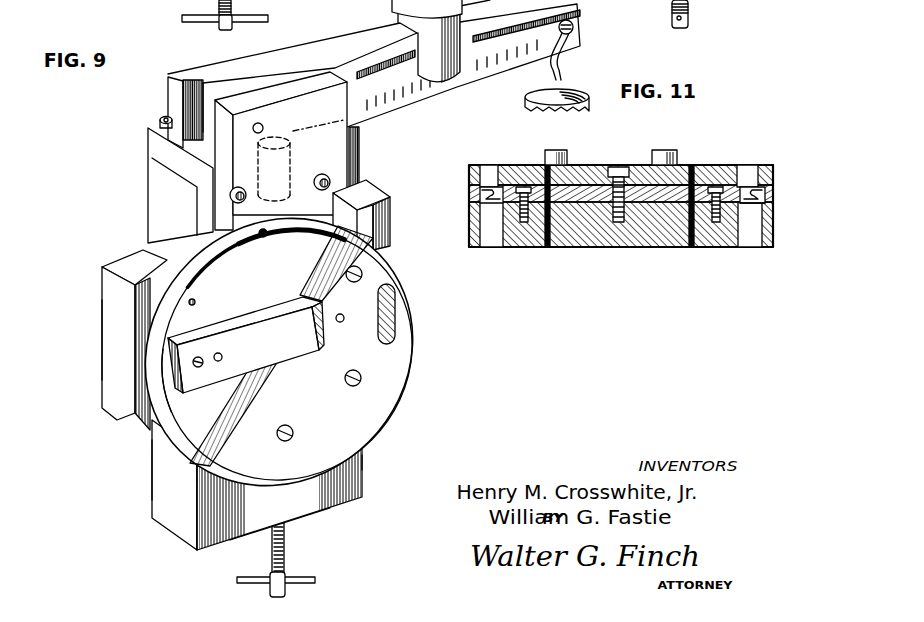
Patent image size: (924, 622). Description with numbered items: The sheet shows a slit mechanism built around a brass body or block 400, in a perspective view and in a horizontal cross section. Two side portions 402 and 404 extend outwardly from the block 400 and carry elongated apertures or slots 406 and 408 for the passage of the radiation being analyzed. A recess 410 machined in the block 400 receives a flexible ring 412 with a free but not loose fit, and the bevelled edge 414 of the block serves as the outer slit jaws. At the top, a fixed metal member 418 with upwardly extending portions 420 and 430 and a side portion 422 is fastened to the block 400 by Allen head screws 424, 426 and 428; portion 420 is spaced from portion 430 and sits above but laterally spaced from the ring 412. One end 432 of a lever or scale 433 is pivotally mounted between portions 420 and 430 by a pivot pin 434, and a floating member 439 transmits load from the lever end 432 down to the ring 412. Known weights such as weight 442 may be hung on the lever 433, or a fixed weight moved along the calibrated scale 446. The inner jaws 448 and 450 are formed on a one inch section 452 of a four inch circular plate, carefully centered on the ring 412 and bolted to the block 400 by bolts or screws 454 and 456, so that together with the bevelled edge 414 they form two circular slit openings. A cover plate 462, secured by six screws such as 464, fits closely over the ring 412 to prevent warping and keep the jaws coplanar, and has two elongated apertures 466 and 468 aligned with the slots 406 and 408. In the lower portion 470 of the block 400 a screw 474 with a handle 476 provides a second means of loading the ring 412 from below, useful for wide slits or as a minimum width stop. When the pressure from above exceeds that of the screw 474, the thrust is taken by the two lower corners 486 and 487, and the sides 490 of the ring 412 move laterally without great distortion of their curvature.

In FIG. 9, the brass body or block 400 is at (96, 352).
In FIG. 11, the brass body or block 400 is at (583, 252).
In FIG. 9, the side portion 402 is at (110, 278).
In FIG. 11, the side portion 402 is at (468, 240).
In FIG. 9, the side portion 404 is at (390, 222).
In FIG. 11, the side portion 404 is at (773, 240).
In FIG. 11, the elongated aperture or slot 406 is at (491, 237).
In FIG. 11, the elongated aperture or slot 408 is at (752, 235).
In FIG. 9, the recess 410 is at (345, 457).
In FIG. 9, the flexible ring 412 is at (182, 438).
In FIG. 11, the flexible ring 412 is at (677, 190).
In FIG. 9, the bevelled edge 414 is at (193, 447).
In FIG. 11, the bevelled edge 414 is at (480, 192).
In FIG. 9, the fixed metal member 418 is at (338, 140).
In FIG. 9, the upwardly extending portion 420 is at (343, 111).
In FIG. 9, the side portion 422 is at (158, 150).
In FIG. 9, the Allen head screw 424 is at (161, 118).
In FIG. 9, the Allen head screw 426 is at (248, 205).
In FIG. 11, the Allen head screw 426 is at (664, 150).
In FIG. 9, the Allen head screw 428 is at (315, 188).
In FIG. 11, the Allen head screw 428 is at (555, 150).
In FIG. 9, the upwardly extending portion 430 is at (194, 74).
In FIG. 9, the end of lever 432 is at (237, 80).
In FIG. 9, the lever or scale 433 is at (435, 97).
In FIG. 9, the pivot pin 434 is at (265, 128).
In FIG. 9, the floating member 439 is at (282, 237).
In FIG. 9, the weight 442 is at (572, 90).
In FIG. 9, the calibrated scale 446 is at (498, 58).
In FIG. 9, the inner jaw 448 is at (184, 352).
In FIG. 11, the inner jaw 448 is at (740, 197).
In FIG. 11, the inner jaw 450 is at (492, 200).
In FIG. 9, the section of circular plate 452 is at (292, 343).
In FIG. 11, the section of circular plate 452 is at (600, 195).
In FIG. 9, the bolt or screw 454 is at (203, 365).
In FIG. 11, the bolt or screw 454 is at (717, 243).
In FIG. 11, the bolt or screw 456 is at (531, 237).
In FIG. 9, the cover plate 462 is at (387, 362).
In FIG. 11, the cover plate 462 is at (593, 170).
In FIG. 9, the screw 464 is at (355, 283).
In FIG. 11, the screw 464 is at (630, 240).
In FIG. 9, the elongated aperture 466 is at (393, 318).
In FIG. 11, the elongated aperture 466 is at (495, 172).
In FIG. 11, the elongated aperture 468 is at (743, 170).
In FIG. 9, the lower portion of block 470 is at (305, 498).
In FIG. 9, the screw 474 is at (286, 558).
In FIG. 9, the handle 476 is at (253, 7).
In FIG. 9, the lower corner 486 is at (203, 484).
In FIG. 9, the lower corner 487 is at (352, 446).
In FIG. 9, the sides of ring 490 is at (140, 400).